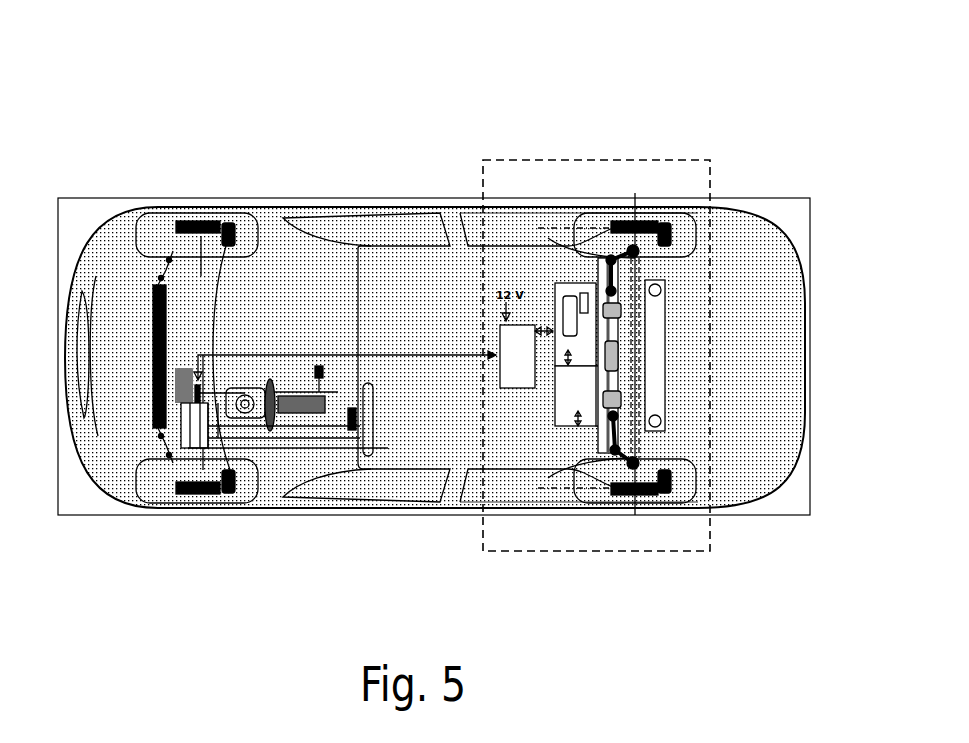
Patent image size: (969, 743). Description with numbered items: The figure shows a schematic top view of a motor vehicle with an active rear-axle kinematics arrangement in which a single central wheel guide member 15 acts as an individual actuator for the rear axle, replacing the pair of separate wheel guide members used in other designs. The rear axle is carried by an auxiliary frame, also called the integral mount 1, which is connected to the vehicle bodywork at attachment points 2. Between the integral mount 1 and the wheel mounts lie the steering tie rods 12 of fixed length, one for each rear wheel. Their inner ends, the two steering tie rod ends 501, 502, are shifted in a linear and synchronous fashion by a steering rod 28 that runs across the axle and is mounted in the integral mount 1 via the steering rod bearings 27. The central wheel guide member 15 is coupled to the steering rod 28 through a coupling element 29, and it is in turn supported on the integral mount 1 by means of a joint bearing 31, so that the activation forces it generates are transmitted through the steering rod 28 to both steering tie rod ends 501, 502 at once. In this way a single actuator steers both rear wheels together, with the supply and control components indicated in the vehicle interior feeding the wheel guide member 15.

The auxiliary frame 1 is at (645, 372).
The attachment points 2 is at (630, 543).
The steering tie rod 12 is at (645, 248).
The central wheel guide member 15 is at (548, 276).
The steering rod bearings 27 is at (613, 302).
The steering rod 28 is at (580, 385).
The coupling element 29 is at (612, 345).
The joint bearing 31 is at (600, 283).
The steering tie rod end 501 is at (633, 453).
The steering tie rod end 502 is at (600, 252).